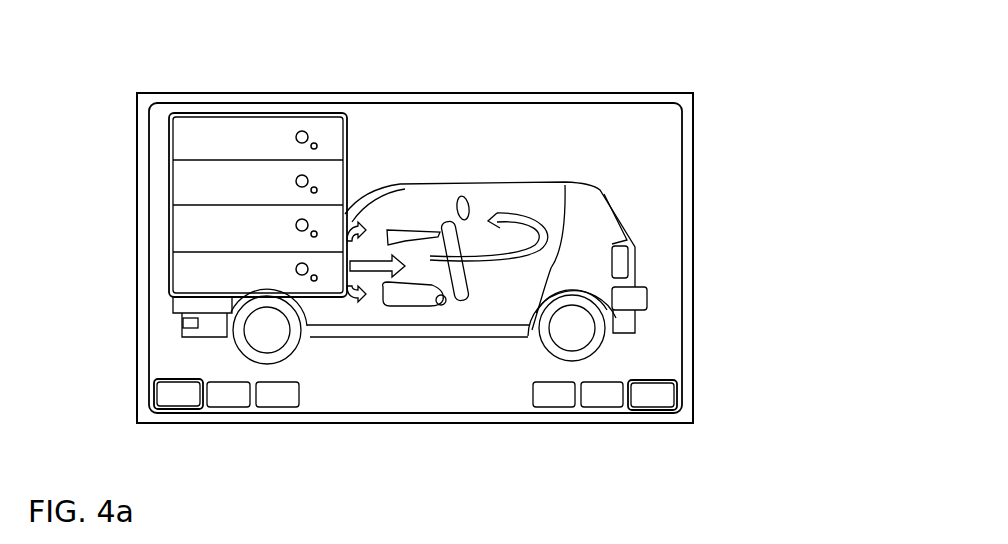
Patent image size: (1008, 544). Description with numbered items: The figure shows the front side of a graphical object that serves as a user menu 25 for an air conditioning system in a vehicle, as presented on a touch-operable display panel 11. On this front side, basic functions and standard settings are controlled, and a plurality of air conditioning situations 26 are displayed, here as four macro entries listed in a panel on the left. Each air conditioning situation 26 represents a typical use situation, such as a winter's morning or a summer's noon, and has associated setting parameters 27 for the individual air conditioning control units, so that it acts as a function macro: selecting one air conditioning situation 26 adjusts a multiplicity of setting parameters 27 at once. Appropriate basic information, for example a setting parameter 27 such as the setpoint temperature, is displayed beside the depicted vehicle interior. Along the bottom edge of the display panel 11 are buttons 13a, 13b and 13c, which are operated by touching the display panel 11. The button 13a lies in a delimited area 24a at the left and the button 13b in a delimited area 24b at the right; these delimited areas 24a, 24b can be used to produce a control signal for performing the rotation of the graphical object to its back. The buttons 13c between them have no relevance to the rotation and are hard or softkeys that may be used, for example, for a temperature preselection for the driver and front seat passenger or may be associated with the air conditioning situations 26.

The display panel 11 is at (688, 112).
The setting parameters 27 is at (422, 207).
The user menu 25 is at (172, 272).
The air conditioning situations 26 is at (187, 260).
The delimited area 24a is at (165, 377).
The delimited area 24b is at (665, 377).
The button 13a is at (178, 398).
The button 13b is at (654, 397).
The buttons 13c is at (275, 398).